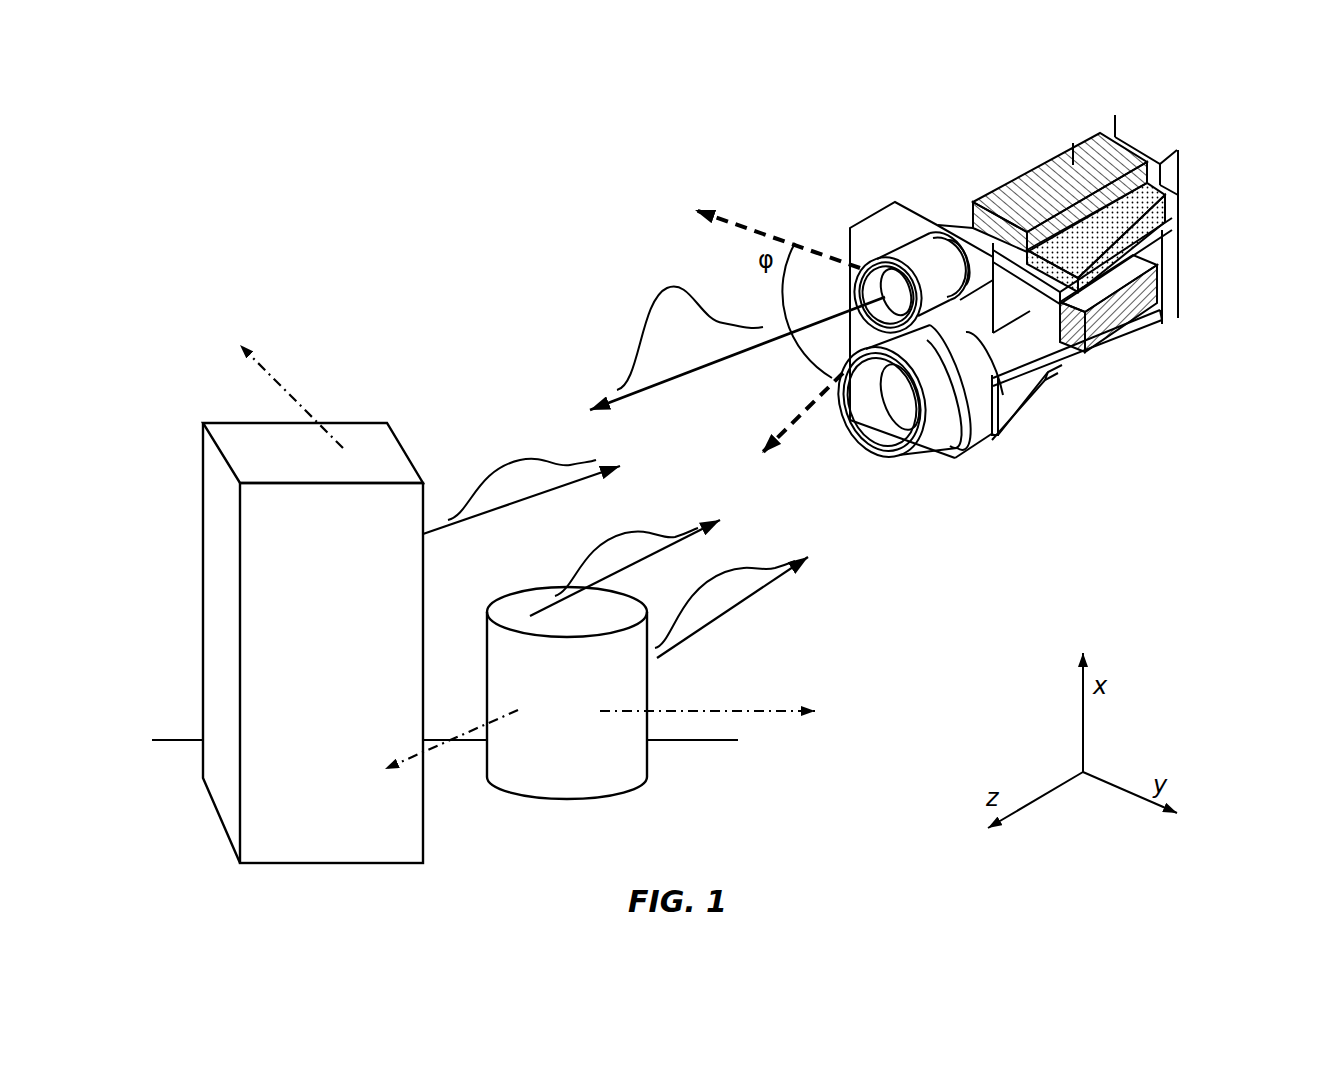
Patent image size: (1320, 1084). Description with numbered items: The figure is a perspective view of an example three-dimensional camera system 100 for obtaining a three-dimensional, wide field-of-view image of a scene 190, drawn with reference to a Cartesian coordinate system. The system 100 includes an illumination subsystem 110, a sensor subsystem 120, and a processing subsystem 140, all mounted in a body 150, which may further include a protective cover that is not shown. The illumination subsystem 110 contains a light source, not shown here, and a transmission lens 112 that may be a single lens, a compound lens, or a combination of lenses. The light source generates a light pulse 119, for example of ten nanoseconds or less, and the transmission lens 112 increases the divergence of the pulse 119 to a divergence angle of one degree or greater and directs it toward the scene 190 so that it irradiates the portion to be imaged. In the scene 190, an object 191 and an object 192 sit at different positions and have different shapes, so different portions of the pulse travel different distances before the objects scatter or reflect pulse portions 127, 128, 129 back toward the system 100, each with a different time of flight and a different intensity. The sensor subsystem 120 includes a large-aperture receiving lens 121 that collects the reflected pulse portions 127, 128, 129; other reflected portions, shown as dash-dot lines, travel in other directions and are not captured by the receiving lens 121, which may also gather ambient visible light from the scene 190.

The 3D camera system 100 is at (1014, 286).
The illumination subsystem 110 is at (1140, 228).
The transmission lens 112 is at (900, 255).
The light pulse 119 is at (662, 288).
The sensor subsystem 120 is at (1138, 305).
The receiving lens 121 is at (927, 422).
The pulse portion 127 is at (524, 455).
The pulse portion 128 is at (651, 530).
The pulse portion 129 is at (775, 565).
The processing subsystem 140 is at (1088, 153).
The body 150 is at (997, 414).
The scene 190 is at (752, 770).
The object 191 is at (568, 800).
The object 192 is at (355, 865).